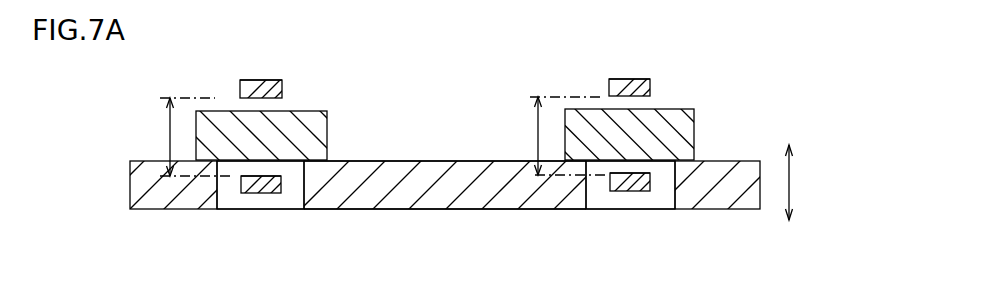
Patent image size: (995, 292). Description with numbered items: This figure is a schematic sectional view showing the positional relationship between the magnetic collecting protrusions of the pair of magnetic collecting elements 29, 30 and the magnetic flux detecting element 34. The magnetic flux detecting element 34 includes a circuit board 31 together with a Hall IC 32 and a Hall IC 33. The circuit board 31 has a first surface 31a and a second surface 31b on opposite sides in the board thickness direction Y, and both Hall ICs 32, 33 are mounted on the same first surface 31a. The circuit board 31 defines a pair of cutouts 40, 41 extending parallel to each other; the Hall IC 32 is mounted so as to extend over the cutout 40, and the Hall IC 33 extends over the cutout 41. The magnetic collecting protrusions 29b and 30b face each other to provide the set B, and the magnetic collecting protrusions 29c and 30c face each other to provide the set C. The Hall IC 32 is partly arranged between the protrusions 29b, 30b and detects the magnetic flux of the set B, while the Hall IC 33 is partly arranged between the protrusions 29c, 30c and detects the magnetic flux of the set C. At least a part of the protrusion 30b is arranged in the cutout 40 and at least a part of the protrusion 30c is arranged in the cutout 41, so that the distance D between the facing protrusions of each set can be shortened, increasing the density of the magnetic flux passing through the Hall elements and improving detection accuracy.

The magnetic collecting element 29 is at (284, 90).
The magnetic collecting protrusion 29b is at (627, 86).
The magnetic collecting protrusion 29c is at (258, 83).
The magnetic collecting element 30 is at (246, 196).
The magnetic collecting protrusion 30b is at (630, 192).
The magnetic collecting protrusion 30c is at (262, 194).
The circuit board 31 is at (416, 158).
The first surface 31a is at (452, 160).
The second surface 31b is at (430, 210).
The Hall IC 32 is at (695, 130).
The Hall IC 33 is at (328, 131).
The magnetic flux detecting element 34 is at (745, 90).
The cutout 40 is at (660, 201).
The cutout 41 is at (292, 201).
The set B is at (655, 72).
The set C is at (283, 72).
The distance D is at (165, 132).
The board thickness direction Y is at (794, 181).